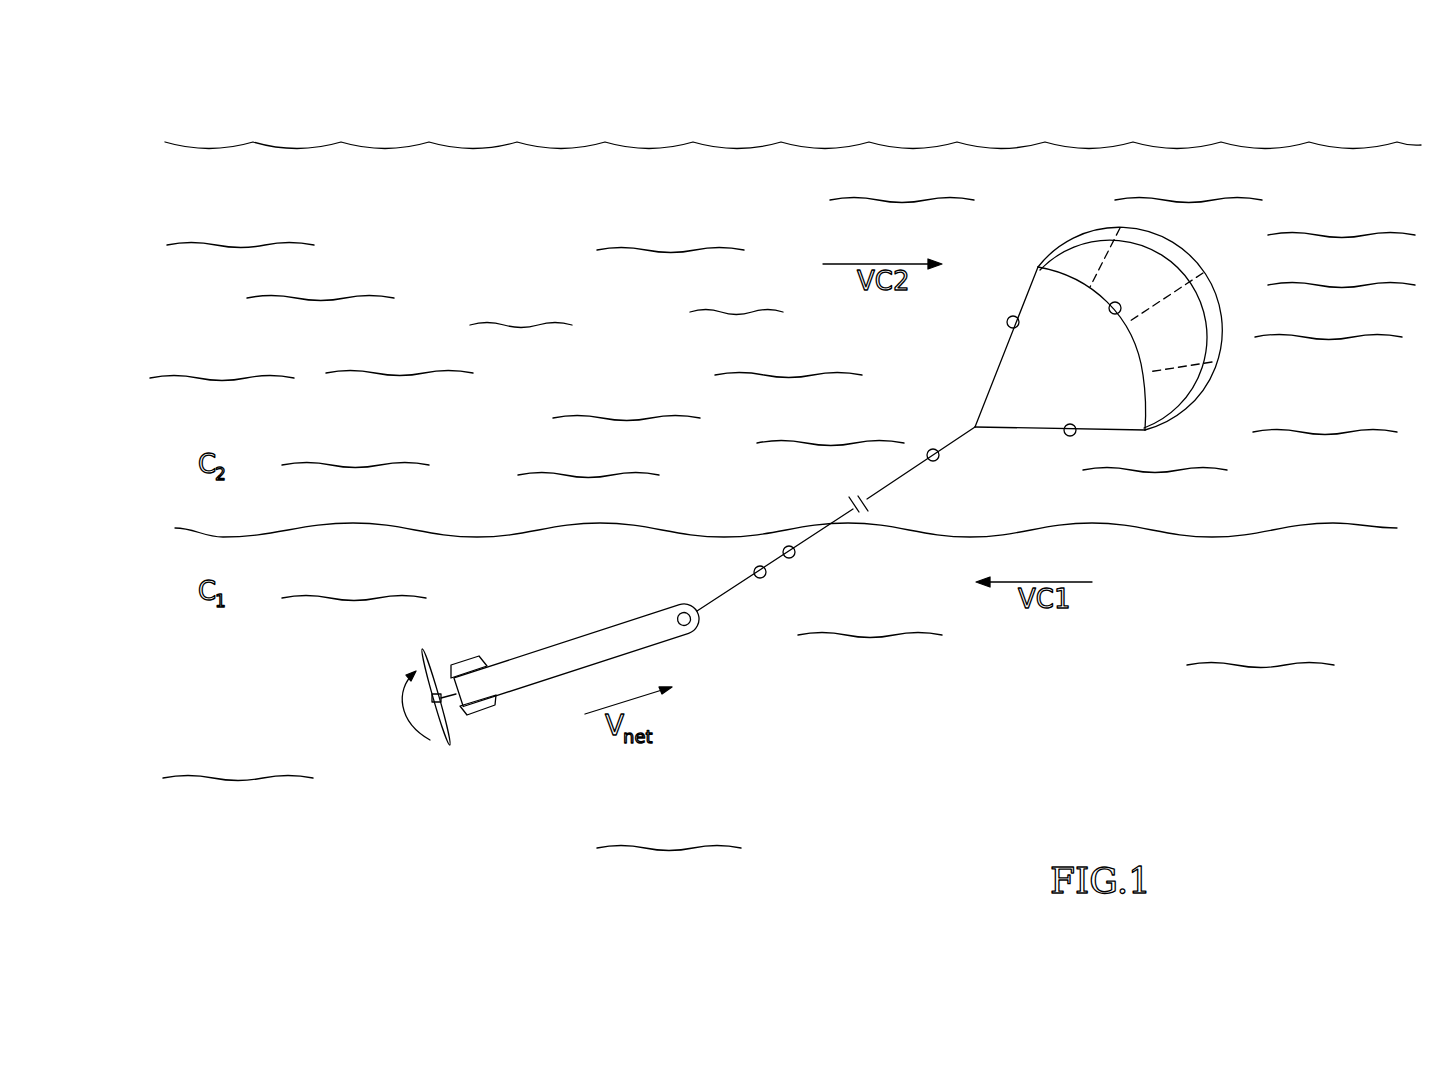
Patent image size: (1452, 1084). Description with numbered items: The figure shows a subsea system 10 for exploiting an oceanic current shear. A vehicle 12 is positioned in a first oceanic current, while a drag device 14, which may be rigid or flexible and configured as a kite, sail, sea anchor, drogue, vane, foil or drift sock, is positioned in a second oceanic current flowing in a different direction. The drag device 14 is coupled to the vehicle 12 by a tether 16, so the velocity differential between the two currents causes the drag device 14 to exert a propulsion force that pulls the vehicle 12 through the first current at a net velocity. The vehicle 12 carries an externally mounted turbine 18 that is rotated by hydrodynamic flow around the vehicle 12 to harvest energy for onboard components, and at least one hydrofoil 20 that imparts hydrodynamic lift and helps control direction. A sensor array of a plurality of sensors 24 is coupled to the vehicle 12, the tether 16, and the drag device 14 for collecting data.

The subsea system 10 is at (700, 402).
The vehicle 12 is at (555, 626).
The drag device 14 is at (1242, 384).
The tether 16 is at (743, 588).
The turbine 18 is at (444, 742).
The hydrofoil 20 is at (457, 664).
The sensors 24 is at (1110, 314).